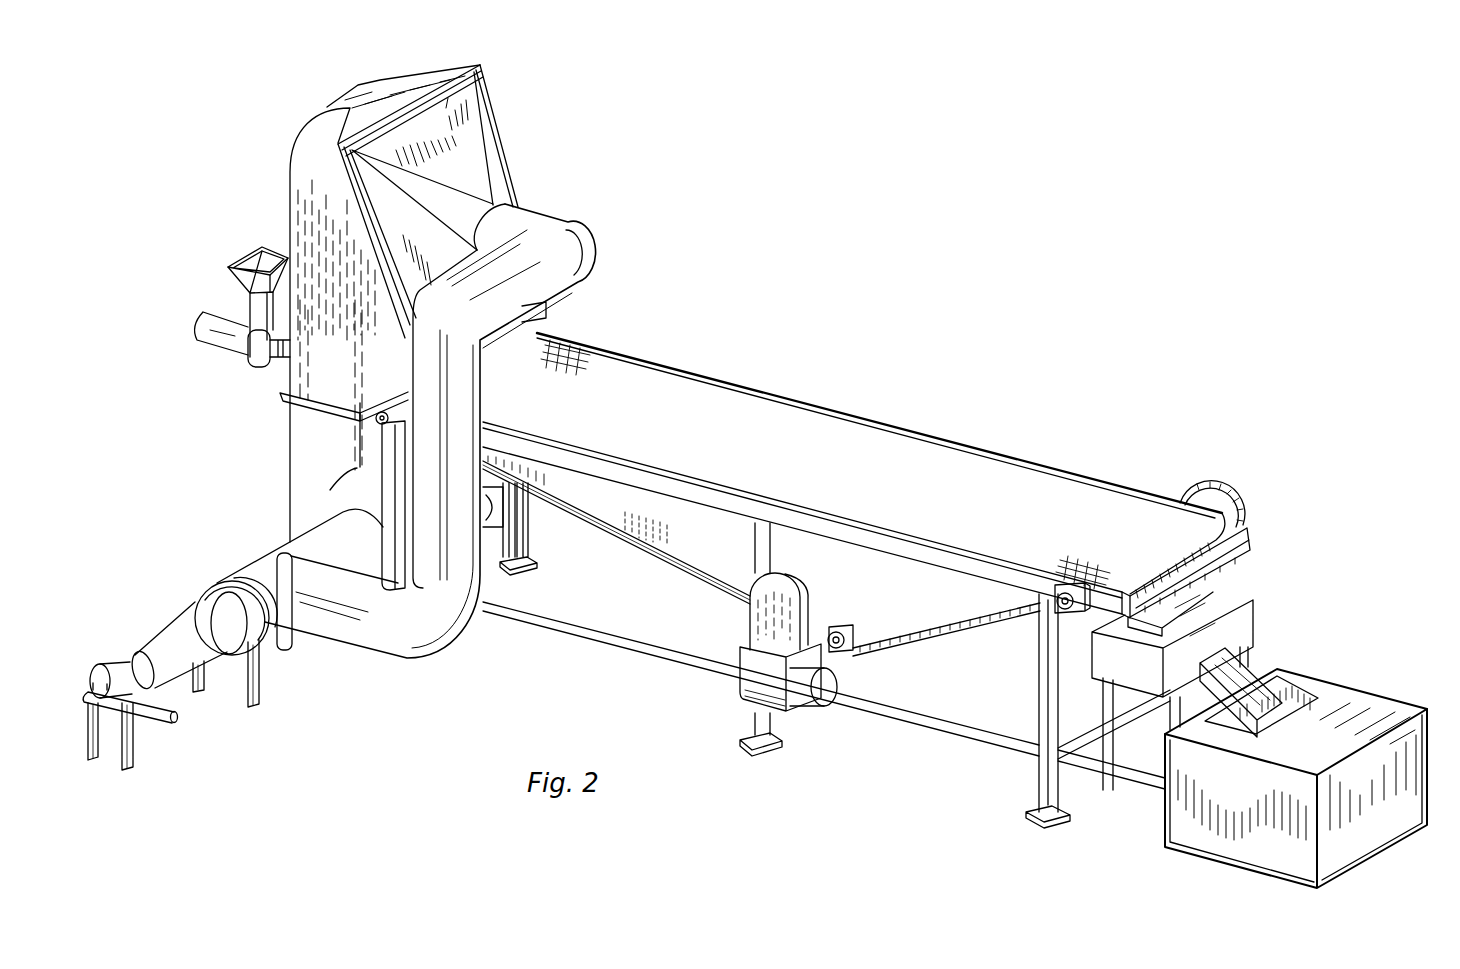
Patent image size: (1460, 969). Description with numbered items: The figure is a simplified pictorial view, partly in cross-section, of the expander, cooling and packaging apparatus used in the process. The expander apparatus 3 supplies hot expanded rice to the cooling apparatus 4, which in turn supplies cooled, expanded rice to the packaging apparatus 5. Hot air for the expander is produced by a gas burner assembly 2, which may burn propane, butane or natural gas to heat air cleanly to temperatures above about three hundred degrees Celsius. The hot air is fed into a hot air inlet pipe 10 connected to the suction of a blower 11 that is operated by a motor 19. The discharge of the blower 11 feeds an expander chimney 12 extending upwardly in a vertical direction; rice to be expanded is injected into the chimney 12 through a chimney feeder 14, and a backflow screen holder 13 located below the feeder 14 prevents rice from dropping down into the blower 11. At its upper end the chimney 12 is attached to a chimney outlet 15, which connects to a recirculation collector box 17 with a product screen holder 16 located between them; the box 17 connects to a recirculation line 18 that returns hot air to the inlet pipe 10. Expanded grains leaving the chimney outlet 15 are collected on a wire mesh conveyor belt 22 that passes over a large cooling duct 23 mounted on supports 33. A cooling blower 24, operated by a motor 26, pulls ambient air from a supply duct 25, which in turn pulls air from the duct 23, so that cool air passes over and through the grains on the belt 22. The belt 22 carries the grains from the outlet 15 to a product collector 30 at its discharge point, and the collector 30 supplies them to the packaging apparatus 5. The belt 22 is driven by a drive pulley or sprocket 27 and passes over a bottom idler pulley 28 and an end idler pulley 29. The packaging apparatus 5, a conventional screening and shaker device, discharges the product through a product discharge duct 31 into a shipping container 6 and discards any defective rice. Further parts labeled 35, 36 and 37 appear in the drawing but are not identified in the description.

The gas burner assembly 2 is at (186, 675).
The expander apparatus 3 is at (313, 90).
The cooling apparatus 4 is at (940, 416).
The packaging apparatus 5 is at (1288, 592).
The shipping container 6 is at (1415, 690).
The hot air inlet pipe 10 is at (240, 563).
The blower 11 is at (330, 490).
The expander chimney 12 is at (290, 468).
The backflow screen holder 13 is at (287, 402).
The chimney feeder 14 is at (282, 365).
The chimney outlet 15 is at (420, 80).
The product screen holder 16 is at (475, 64).
The recirculation collector box 17 is at (495, 176).
The recirculation line 18 is at (600, 262).
The motor 19 is at (503, 490).
The wire mesh conveyor belt 22 is at (770, 403).
The cooling duct 23 is at (723, 573).
The cooling blower 24 is at (748, 703).
The supply duct 25 is at (752, 667).
The motor 26 is at (817, 708).
The drive pulley 27 is at (1236, 490).
The bottom idler pulley 28 is at (847, 653).
The end idler pulley 29 is at (372, 418).
The product collector 30 is at (1253, 537).
The packaging apparatus product discharge duct 31 is at (1255, 665).
The supports 33 is at (383, 528).
The funnel 35 is at (245, 255).
The feed chute 36 is at (253, 312).
The feed tube 37 is at (197, 332).